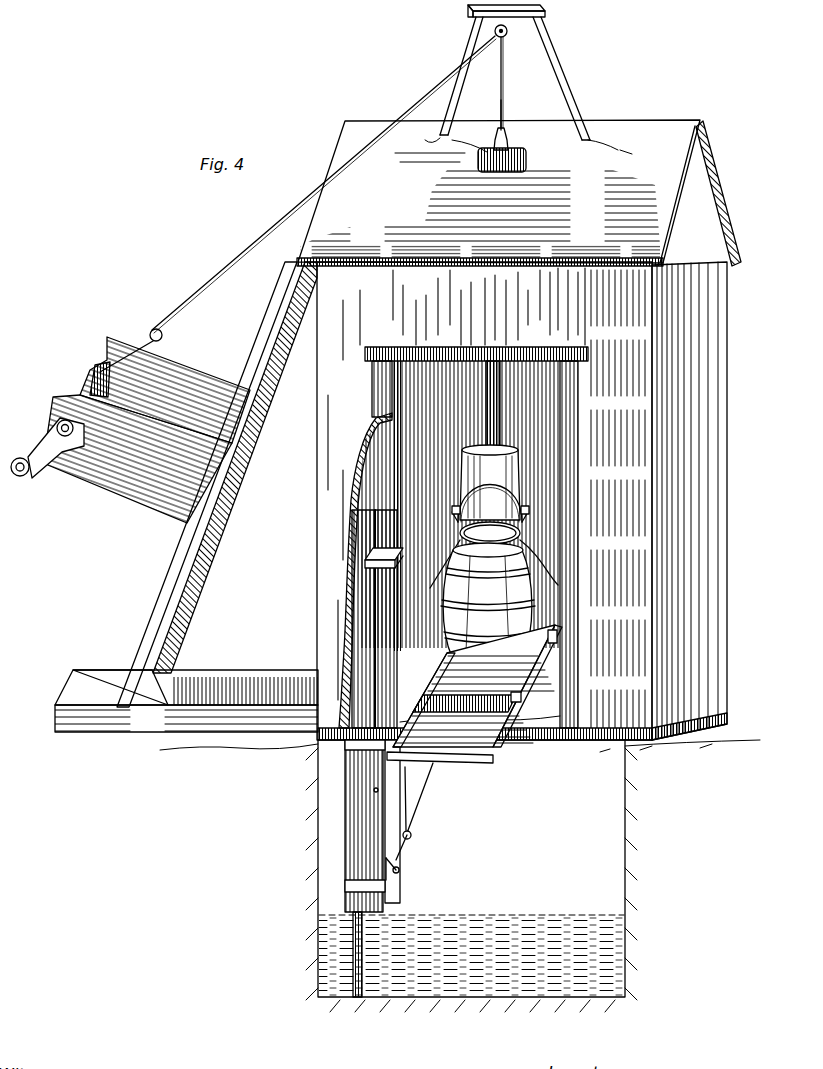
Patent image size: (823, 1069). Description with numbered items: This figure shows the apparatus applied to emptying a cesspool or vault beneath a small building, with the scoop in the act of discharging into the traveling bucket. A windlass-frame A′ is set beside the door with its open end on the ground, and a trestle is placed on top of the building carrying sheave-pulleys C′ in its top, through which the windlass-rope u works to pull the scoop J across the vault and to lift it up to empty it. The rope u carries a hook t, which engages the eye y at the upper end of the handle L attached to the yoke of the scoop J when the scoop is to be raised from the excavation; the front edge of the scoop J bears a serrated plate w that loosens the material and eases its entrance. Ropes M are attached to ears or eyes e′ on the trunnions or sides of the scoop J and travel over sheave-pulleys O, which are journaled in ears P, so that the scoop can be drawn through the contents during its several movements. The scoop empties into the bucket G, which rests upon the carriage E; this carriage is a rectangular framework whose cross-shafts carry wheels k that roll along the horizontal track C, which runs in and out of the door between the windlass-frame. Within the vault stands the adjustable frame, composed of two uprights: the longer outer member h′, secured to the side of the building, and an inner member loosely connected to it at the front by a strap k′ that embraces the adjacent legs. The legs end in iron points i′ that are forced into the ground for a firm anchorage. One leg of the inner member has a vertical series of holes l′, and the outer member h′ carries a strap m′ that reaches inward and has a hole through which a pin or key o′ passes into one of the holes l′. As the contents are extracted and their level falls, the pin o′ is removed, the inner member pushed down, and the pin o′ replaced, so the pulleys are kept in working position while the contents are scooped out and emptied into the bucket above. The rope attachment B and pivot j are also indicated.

The sheave-pulleys C′ is at (507, 33).
The windlass-rope u is at (307, 204).
The hook t is at (506, 113).
The eye y is at (509, 131).
The windlass-frame A′ is at (130, 434).
The rope attachment B is at (112, 381).
The strap m′ is at (372, 573).
The series of holes l′ is at (373, 790).
The pin or key o′ is at (396, 560).
The handle L is at (499, 414).
The scoop J is at (490, 483).
The serrated plate w is at (490, 533).
The ears or eyes e′ is at (528, 516).
The rope or ropes M is at (420, 792).
The bucket G is at (488, 602).
The carriage E is at (477, 686).
The wheels or rollers k is at (557, 634).
The track or way C is at (449, 762).
The outer member h′ is at (361, 757).
The pivot j is at (374, 800).
The strap k′ is at (348, 887).
The sheave-pulleys O is at (412, 835).
The ears P is at (400, 850).
The iron points i′ is at (352, 950).